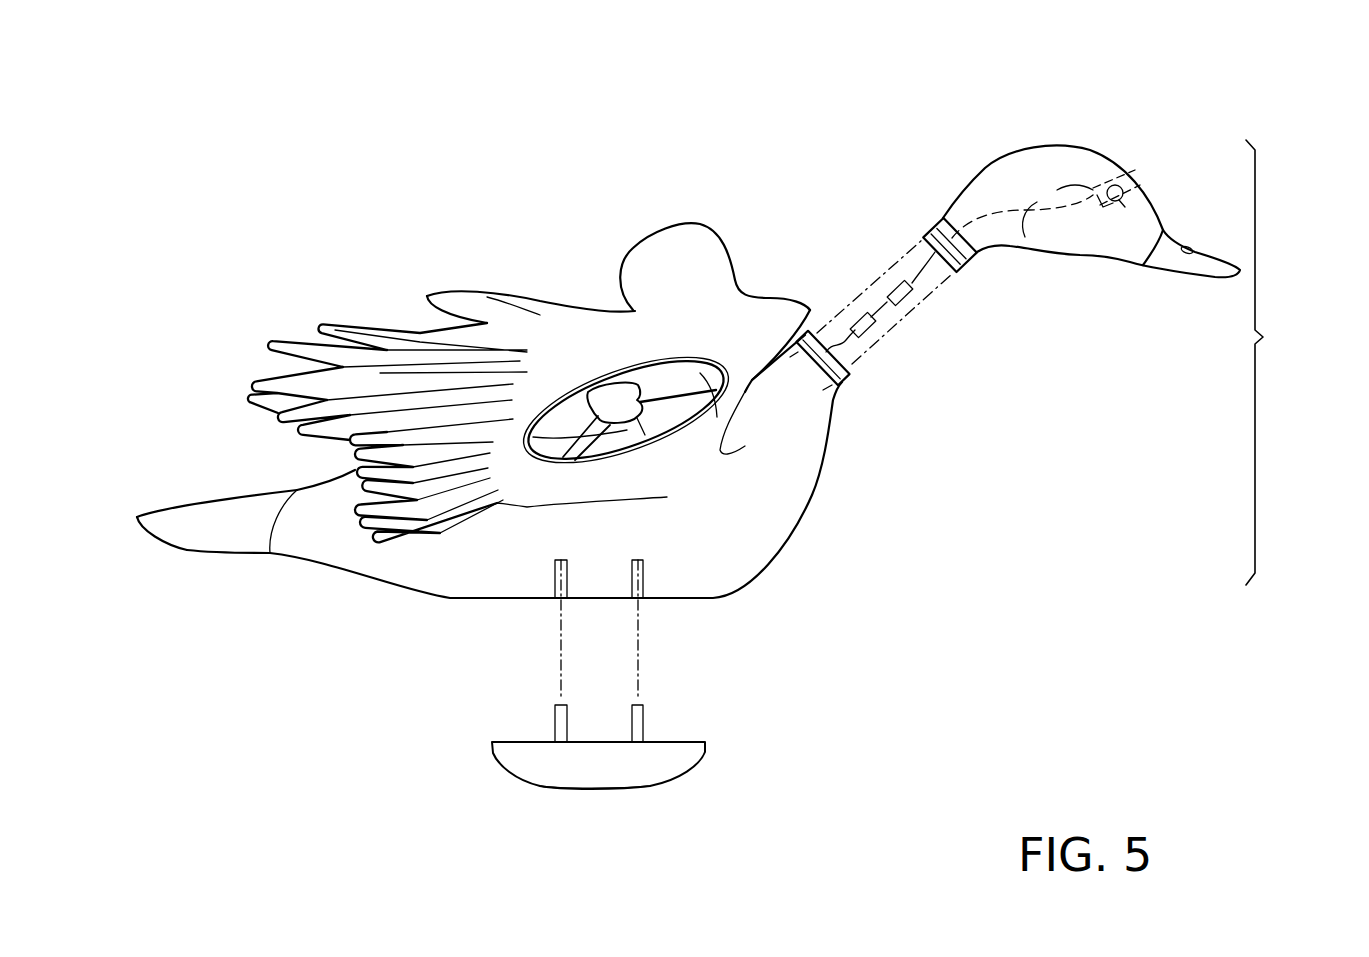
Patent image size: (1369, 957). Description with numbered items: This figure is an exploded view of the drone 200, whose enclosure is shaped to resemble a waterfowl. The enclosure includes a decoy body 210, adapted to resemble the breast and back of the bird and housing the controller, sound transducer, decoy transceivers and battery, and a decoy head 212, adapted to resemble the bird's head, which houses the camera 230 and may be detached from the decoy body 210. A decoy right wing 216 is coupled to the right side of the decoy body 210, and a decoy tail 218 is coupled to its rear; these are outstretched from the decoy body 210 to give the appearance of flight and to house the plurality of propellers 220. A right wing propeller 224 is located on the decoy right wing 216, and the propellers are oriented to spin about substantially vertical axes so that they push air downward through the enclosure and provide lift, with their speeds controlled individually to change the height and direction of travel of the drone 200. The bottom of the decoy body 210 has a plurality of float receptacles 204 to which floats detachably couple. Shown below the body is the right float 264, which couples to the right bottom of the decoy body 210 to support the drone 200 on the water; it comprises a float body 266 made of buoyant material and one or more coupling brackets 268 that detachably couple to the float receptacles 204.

The drone 200 is at (1293, 362).
The float receptacles 204 is at (630, 580).
The decoy body 210 is at (760, 535).
The decoy head 212 is at (1050, 153).
The decoy right wing 216 is at (700, 242).
The decoy tail 218 is at (253, 508).
The plurality of propellers 220 is at (565, 285).
The right wing propeller 224 is at (620, 390).
The camera 230 is at (1147, 177).
The right float 264 is at (633, 780).
The float body 266 is at (523, 768).
The coupling brackets 268 is at (567, 710).